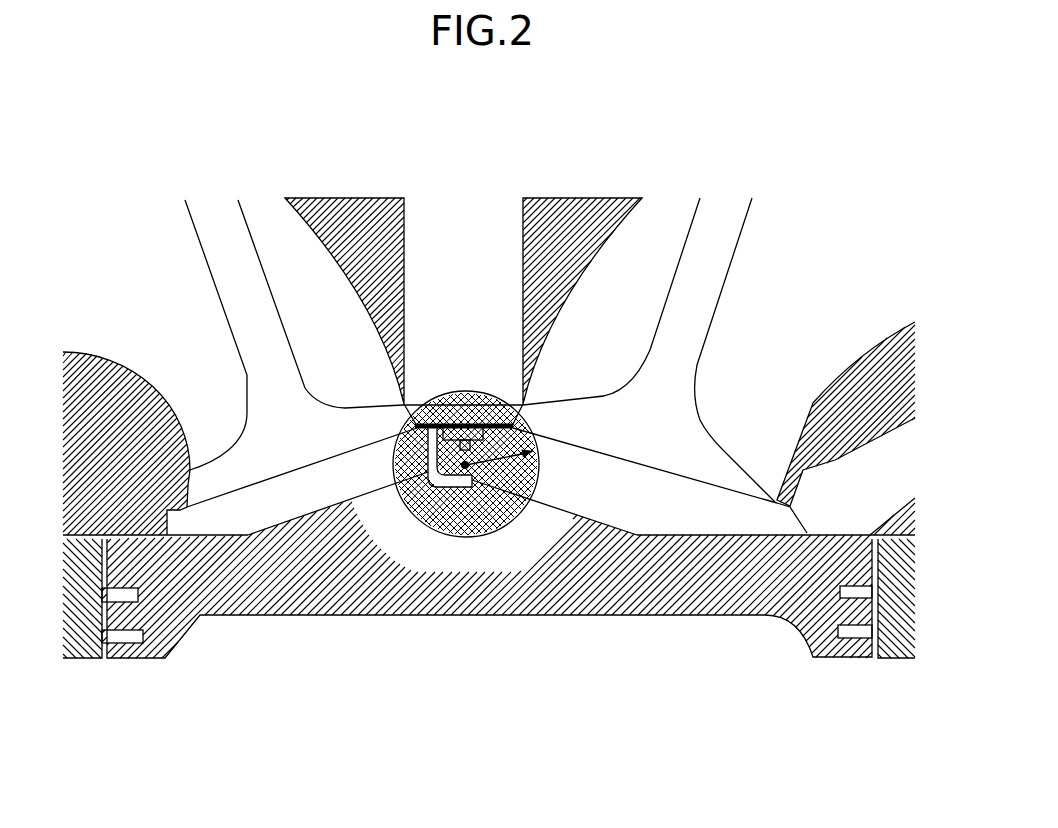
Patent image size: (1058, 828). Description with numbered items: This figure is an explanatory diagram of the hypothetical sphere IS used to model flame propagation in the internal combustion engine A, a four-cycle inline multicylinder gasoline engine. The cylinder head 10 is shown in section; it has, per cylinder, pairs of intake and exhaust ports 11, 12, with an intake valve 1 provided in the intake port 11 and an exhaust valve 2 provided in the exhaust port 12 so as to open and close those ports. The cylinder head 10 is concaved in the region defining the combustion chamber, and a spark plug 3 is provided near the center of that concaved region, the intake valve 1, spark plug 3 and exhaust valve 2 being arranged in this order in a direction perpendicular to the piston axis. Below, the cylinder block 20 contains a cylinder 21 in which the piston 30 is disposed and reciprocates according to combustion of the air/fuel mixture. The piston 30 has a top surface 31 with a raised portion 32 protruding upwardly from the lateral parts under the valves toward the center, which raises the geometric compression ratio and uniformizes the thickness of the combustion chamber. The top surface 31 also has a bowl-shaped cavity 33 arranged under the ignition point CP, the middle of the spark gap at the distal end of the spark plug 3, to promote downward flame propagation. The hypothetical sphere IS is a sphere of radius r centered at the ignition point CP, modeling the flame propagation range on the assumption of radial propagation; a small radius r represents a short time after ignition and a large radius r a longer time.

The intake valve 1 is at (710, 293).
The exhaust valve 2 is at (215, 263).
The spark plug 3 is at (460, 198).
The cylinder head 10 is at (103, 357).
The intake port 11 is at (790, 204).
The exhaust port 12 is at (142, 205).
The cylinder block 20 is at (85, 660).
The cylinder 21 is at (838, 621).
The piston 30 is at (622, 616).
The top surface 31 is at (668, 523).
The raised portion 32 is at (612, 525).
The cavity 33 is at (447, 562).
The internal combustion engine A is at (708, 712).
The ignition point CP is at (466, 468).
The hypothetical sphere IS is at (537, 455).
The radius r is at (500, 450).